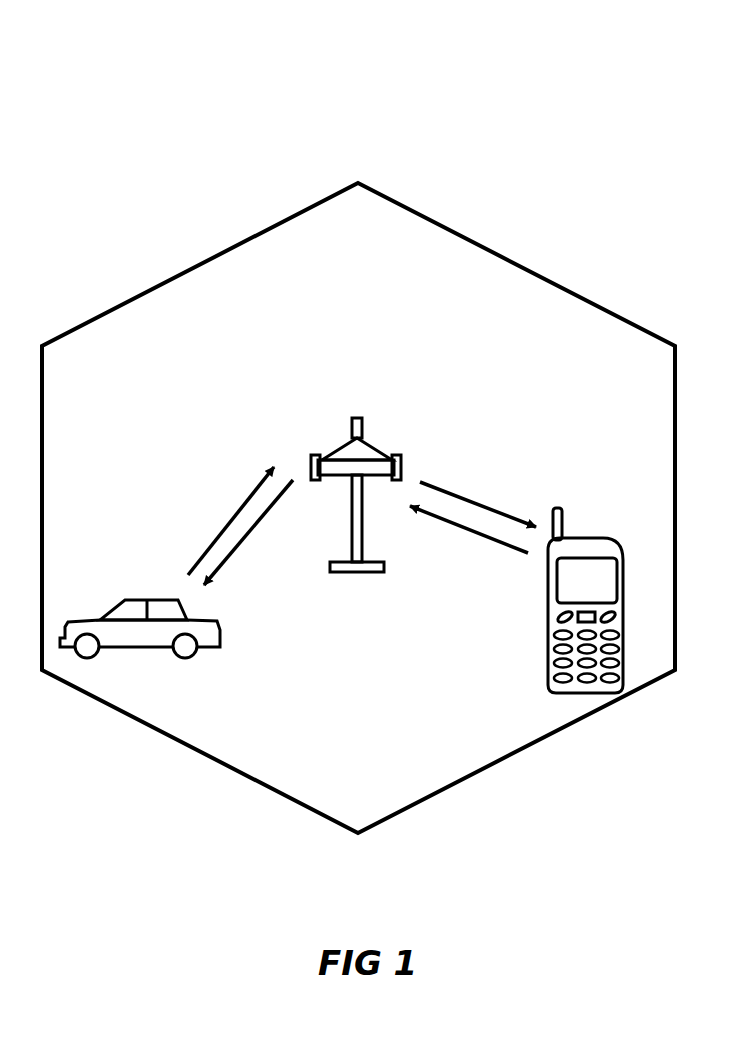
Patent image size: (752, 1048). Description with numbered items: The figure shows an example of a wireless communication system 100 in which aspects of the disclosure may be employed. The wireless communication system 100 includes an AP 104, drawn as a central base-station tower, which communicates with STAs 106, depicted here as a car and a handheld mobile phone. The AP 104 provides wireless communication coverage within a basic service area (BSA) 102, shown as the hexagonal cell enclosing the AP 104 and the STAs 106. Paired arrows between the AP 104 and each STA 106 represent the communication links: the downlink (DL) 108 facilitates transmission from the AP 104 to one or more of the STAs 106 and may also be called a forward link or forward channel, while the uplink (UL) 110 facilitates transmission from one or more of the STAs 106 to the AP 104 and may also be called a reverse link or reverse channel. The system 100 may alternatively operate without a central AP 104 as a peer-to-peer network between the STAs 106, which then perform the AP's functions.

The wireless communication system 100 is at (612, 84).
The basic service area (BSA) 102 is at (603, 303).
The AP 104 is at (357, 418).
The STAs 106 is at (143, 598).
The downlink (DL) 108 is at (443, 490).
The uplink (UL) 110 is at (497, 543).